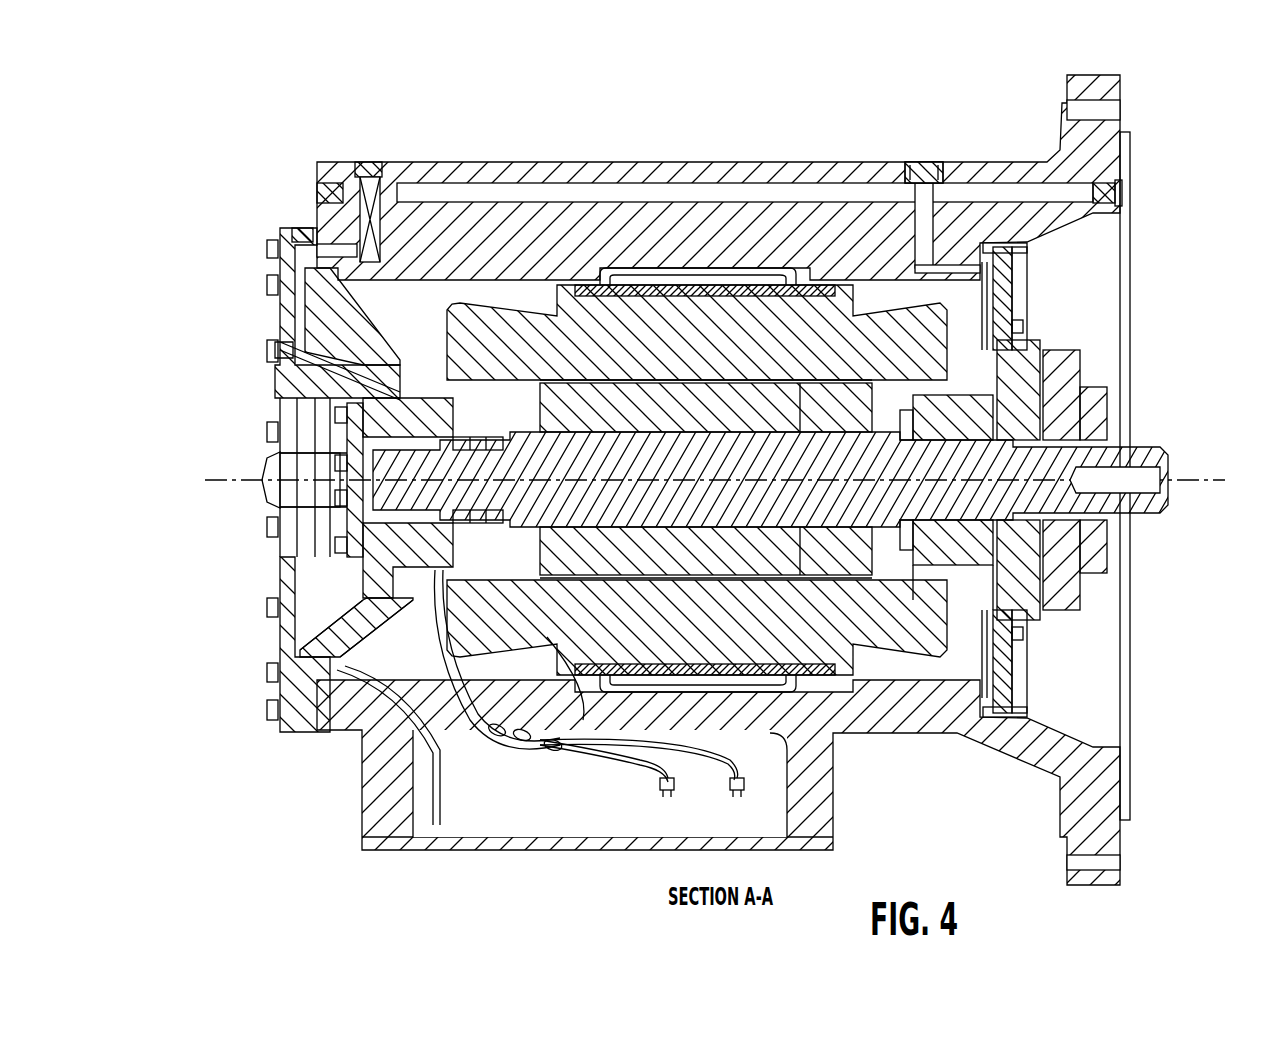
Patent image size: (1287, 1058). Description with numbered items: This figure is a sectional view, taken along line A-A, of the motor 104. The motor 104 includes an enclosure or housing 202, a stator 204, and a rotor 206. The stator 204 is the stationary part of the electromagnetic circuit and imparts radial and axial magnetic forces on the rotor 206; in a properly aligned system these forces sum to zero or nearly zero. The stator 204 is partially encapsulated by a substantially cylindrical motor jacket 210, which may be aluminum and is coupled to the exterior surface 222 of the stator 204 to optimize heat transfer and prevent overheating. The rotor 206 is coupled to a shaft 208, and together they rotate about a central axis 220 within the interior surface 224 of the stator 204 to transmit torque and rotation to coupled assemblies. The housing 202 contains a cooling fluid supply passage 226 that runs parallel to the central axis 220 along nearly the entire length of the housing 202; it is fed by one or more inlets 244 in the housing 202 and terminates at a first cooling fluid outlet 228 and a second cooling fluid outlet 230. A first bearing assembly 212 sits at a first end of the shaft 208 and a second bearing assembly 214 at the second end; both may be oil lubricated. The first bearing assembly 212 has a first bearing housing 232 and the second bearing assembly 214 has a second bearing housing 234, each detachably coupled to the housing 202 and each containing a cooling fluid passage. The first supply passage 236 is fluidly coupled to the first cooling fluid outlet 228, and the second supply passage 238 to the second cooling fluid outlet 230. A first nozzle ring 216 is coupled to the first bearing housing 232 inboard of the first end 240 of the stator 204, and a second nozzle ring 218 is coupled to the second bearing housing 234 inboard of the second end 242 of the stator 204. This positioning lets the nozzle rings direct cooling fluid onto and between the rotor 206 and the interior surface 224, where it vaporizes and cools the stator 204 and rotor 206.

The motor 104 is at (238, 140).
The motor housing 202 is at (578, 222).
The stator 204 is at (825, 315).
The rotor 206 is at (737, 400).
The shaft 208 is at (583, 500).
The motor jacket 210 is at (650, 668).
The first bearing assembly 212 is at (186, 347).
The second bearing assembly 214 is at (1214, 416).
The first nozzle ring 216 is at (478, 655).
The second nozzle ring 218 is at (932, 615).
The central axis 220 is at (715, 465).
The exterior surface 222 is at (622, 283).
The interior surface 224 is at (802, 380).
The cooling fluid supply passage 226 is at (642, 192).
The first cooling fluid outlet 228 is at (372, 225).
The second cooling fluid outlet 230 is at (955, 200).
The first bearing housing 232 is at (326, 633).
The second bearing housing 234 is at (1000, 628).
The first supply passage 236 is at (320, 340).
The second supply passage 238 is at (965, 405).
The first end 240 is at (437, 312).
The second end 242 is at (947, 325).
The inlets 244 is at (372, 165).